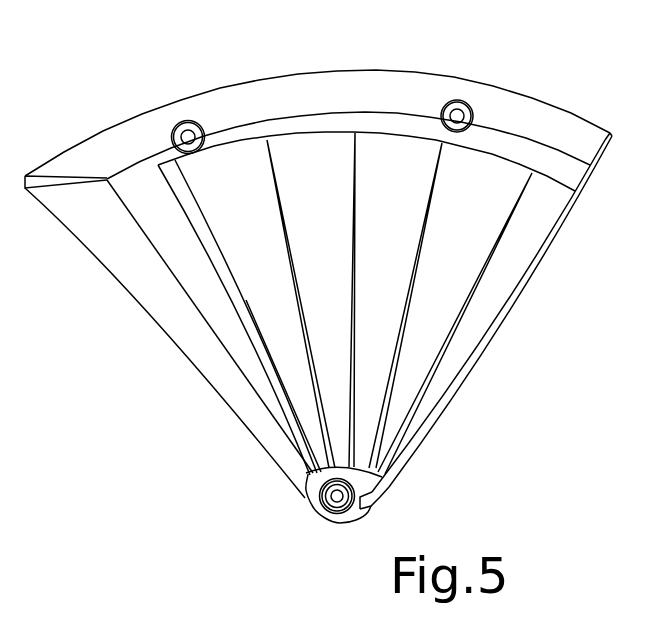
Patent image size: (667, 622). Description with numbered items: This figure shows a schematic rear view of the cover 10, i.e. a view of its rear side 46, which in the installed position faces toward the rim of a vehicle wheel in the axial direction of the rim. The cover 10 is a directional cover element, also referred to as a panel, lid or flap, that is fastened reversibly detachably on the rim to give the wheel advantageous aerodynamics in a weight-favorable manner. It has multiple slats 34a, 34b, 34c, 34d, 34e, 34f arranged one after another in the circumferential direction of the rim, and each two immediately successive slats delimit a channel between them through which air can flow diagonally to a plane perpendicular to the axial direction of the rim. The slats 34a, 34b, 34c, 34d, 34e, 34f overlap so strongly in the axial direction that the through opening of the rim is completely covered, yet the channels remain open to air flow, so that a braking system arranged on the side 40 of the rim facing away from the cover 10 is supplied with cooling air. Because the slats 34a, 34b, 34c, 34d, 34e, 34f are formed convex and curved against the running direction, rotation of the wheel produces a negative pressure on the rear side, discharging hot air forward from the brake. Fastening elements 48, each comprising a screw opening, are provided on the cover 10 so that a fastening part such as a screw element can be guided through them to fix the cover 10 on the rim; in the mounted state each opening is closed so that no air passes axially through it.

The cover 10 is at (576, 116).
The slat 34a is at (163, 303).
The slat 34b is at (235, 168).
The slat 34c is at (310, 160).
The slat 34d is at (402, 163).
The slat 34e is at (487, 188).
The slat 34f is at (510, 277).
The side of the rim 40 is at (249, 346).
The rear side 46 is at (449, 355).
The fastening element 48 is at (182, 123).